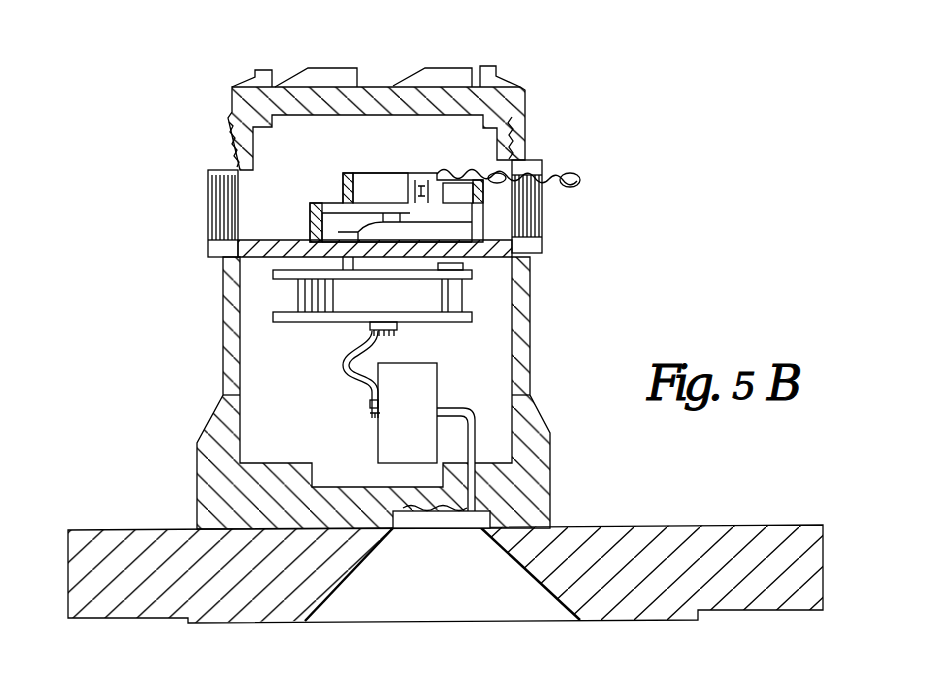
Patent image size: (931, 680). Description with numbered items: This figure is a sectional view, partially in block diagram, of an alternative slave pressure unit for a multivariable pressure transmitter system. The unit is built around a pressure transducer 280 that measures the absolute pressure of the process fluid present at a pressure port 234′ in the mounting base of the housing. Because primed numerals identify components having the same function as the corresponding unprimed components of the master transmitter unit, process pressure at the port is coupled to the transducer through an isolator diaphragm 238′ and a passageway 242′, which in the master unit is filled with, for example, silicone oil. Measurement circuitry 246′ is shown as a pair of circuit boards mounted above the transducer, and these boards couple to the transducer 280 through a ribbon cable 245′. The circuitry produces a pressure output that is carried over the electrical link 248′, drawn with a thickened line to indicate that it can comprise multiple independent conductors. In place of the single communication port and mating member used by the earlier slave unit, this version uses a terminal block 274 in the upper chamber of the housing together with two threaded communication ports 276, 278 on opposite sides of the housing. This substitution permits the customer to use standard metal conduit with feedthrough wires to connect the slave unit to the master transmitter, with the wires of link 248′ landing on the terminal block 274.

The terminal block 274 is at (362, 172).
The communication port 276 is at (200, 227).
The communication port 278 is at (552, 210).
The electrical link 248′ is at (540, 174).
The measurement circuitry 246′ is at (473, 266).
The ribbon cable 245′ is at (342, 342).
The pressure transducer 280 is at (420, 402).
The passageway 242′ is at (470, 478).
The isolator diaphragm 238′ is at (457, 529).
The pressure port 234′ is at (424, 600).